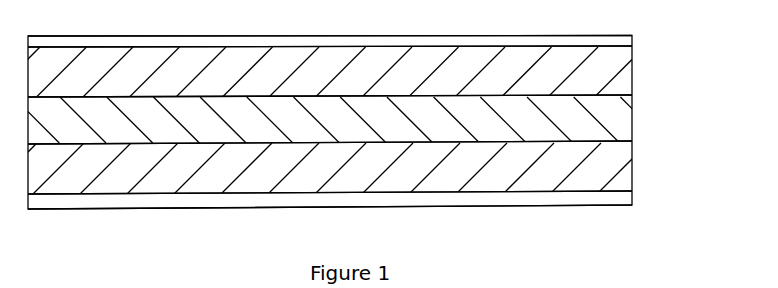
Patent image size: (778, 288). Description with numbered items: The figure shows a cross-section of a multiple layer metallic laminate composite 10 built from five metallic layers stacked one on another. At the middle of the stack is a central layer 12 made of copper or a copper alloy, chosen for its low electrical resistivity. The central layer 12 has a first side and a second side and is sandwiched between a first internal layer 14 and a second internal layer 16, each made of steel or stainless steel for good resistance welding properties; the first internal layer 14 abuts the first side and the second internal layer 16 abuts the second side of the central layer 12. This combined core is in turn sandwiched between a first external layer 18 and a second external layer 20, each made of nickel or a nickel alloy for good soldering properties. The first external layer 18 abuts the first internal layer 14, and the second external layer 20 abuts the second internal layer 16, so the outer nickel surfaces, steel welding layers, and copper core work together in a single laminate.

The multiple layer laminate composite 10 is at (567, 208).
The central layer 12 is at (632, 118).
The first internal layer 14 is at (632, 70).
The second internal layer 16 is at (632, 166).
The first external layer 18 is at (632, 37).
The second external layer 20 is at (632, 197).